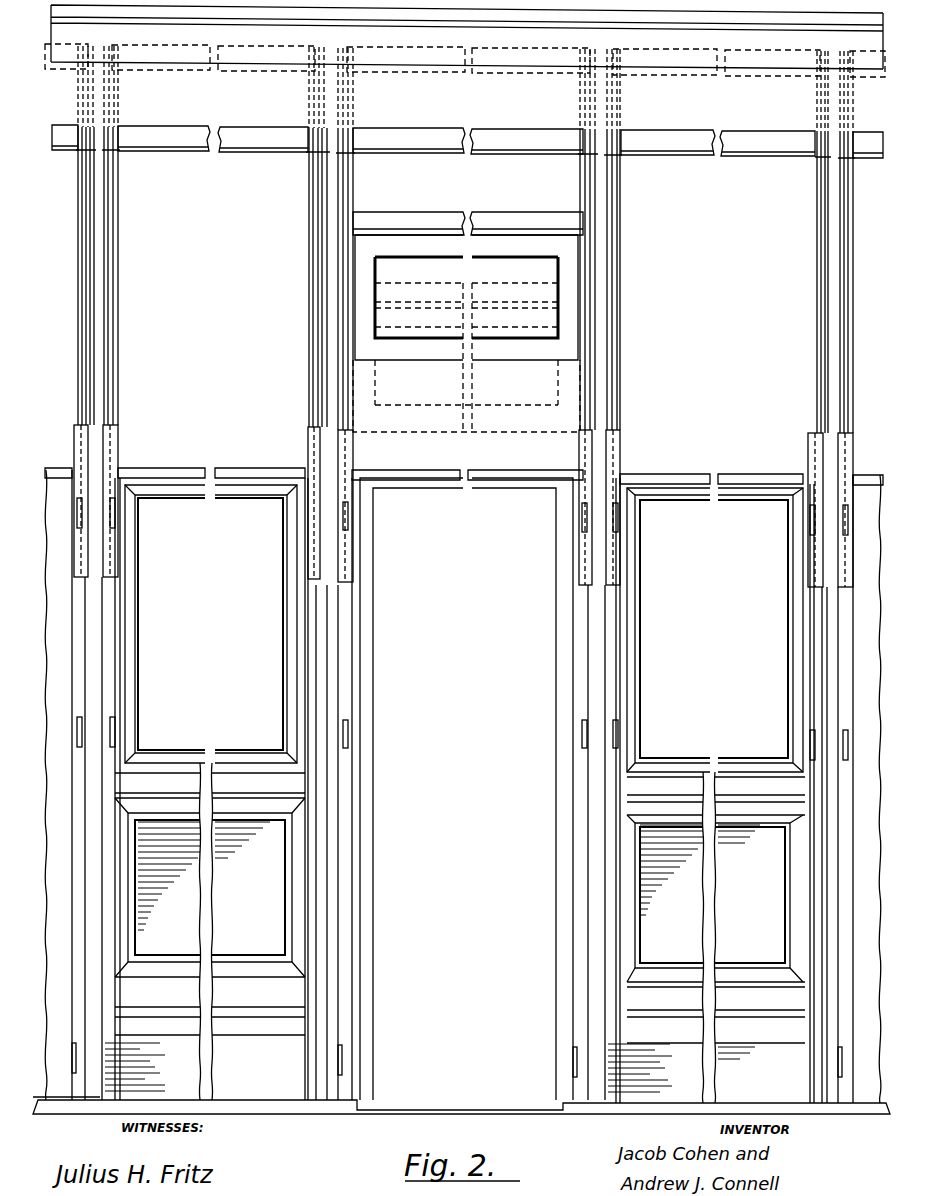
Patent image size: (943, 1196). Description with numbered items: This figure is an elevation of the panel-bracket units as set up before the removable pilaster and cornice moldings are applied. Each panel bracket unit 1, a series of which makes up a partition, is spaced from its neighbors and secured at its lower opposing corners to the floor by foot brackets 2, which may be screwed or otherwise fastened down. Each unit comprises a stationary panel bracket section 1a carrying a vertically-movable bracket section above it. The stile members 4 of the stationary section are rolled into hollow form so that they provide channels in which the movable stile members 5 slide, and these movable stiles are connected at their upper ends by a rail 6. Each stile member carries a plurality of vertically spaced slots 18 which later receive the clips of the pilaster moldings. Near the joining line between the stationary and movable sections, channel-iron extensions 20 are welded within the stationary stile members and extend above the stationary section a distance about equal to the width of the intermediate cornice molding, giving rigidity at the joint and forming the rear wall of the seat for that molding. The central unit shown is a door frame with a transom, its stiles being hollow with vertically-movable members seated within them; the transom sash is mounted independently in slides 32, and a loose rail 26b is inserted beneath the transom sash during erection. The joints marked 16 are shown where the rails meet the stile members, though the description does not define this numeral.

The panel bracket unit 1 is at (455, 794).
The stationary panel bracket section 1a is at (657, 518).
The foot bracket 2 is at (818, 1131).
The stile member 4 is at (805, 613).
The movable stile member 5 is at (853, 302).
The rail 6 is at (868, 133).
The stud-girt joint 16 is at (853, 160).
The slot 18 is at (847, 735).
The channel-iron extension 20 is at (808, 440).
The loose rail 26b is at (440, 375).
The slide 32 is at (580, 252).